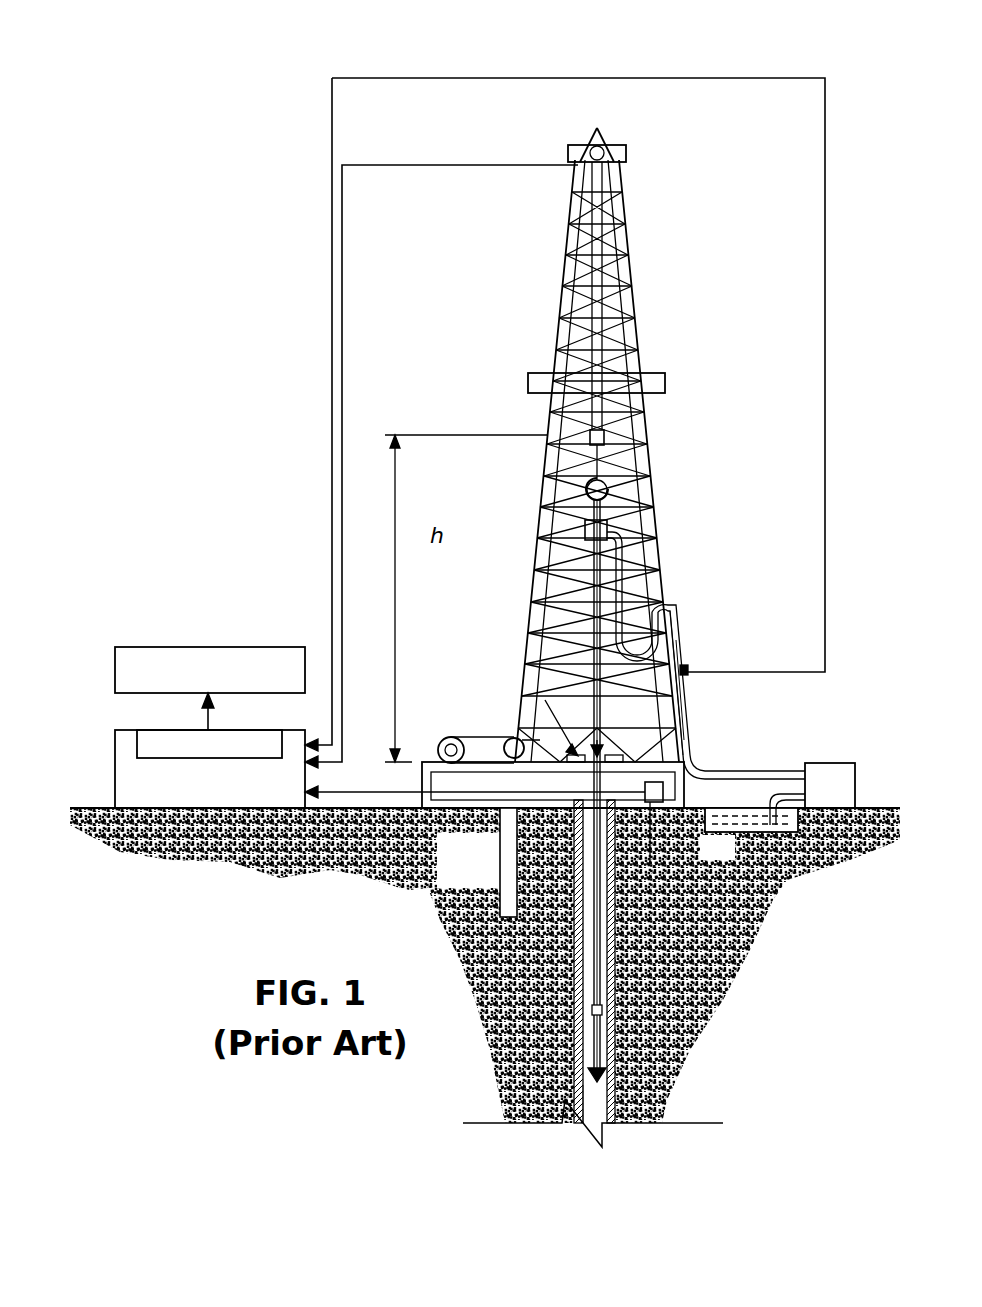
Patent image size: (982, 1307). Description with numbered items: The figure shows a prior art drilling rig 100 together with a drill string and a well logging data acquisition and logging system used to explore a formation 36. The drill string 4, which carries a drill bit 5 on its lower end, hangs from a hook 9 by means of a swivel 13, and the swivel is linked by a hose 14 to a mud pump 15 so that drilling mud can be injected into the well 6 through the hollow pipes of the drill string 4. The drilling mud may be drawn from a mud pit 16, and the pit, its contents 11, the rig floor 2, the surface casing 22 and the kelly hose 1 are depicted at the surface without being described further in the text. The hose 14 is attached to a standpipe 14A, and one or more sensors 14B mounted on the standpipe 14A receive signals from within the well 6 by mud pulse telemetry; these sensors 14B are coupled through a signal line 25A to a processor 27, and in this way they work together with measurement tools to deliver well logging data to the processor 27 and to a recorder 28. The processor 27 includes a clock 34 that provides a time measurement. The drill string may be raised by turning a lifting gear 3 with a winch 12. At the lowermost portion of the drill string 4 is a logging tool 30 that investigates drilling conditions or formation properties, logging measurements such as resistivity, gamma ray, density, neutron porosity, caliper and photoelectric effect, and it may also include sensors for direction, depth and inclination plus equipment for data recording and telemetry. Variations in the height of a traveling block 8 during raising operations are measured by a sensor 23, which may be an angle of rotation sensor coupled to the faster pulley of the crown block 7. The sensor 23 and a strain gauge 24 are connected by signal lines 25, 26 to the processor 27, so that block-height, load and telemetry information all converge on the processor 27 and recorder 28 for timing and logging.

The drilling rig 100 is at (285, 62).
The hose 1 is at (640, 555).
The rig floor 2 is at (502, 808).
The lifting gear 3 is at (660, 394).
The drill string 4 is at (600, 945).
The drill bit 5 is at (600, 1067).
The well 6 is at (594, 1100).
The crown block 7 is at (612, 147).
The traveling block 8 is at (585, 437).
The hook 9 is at (586, 493).
The mud level 11 is at (752, 844).
The winch 12 is at (490, 740).
The swivel 13 is at (583, 536).
The hose 14 is at (683, 622).
The standpipe 14A is at (683, 660).
The sensors 14B is at (688, 670).
The mud pump 15 is at (835, 763).
The mud pit 16 is at (752, 808).
The casing 22 is at (500, 875).
The sensor 23 is at (618, 182).
The strain gauge 24 is at (657, 803).
The signal line 25 is at (344, 397).
The signal line 25A is at (828, 396).
The signal line 26 is at (410, 790).
The processor 27 is at (184, 750).
The recorder 28 is at (133, 647).
The logging tool 30 is at (594, 1010).
The clock 34 is at (122, 730).
The formation 36 is at (485, 977).